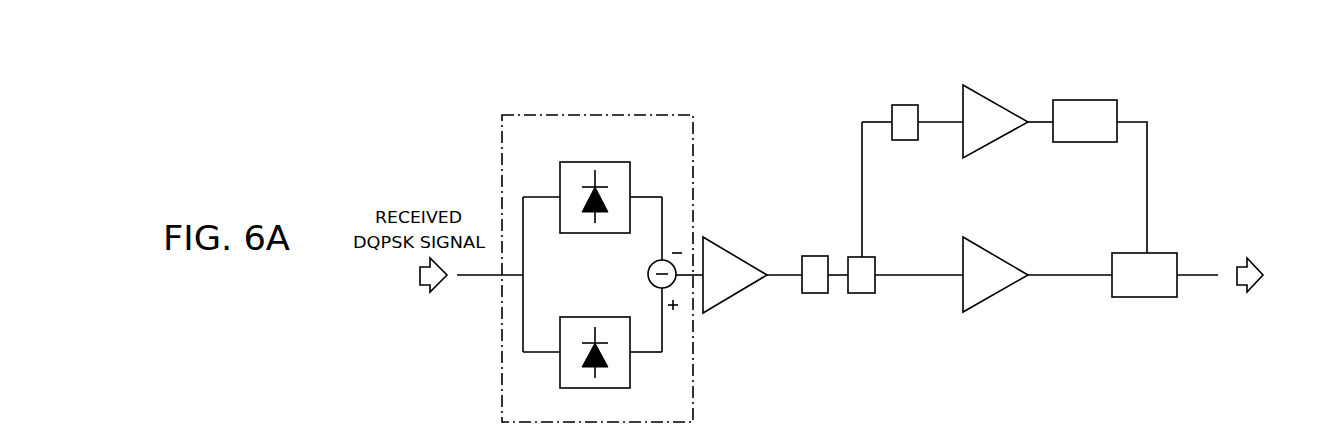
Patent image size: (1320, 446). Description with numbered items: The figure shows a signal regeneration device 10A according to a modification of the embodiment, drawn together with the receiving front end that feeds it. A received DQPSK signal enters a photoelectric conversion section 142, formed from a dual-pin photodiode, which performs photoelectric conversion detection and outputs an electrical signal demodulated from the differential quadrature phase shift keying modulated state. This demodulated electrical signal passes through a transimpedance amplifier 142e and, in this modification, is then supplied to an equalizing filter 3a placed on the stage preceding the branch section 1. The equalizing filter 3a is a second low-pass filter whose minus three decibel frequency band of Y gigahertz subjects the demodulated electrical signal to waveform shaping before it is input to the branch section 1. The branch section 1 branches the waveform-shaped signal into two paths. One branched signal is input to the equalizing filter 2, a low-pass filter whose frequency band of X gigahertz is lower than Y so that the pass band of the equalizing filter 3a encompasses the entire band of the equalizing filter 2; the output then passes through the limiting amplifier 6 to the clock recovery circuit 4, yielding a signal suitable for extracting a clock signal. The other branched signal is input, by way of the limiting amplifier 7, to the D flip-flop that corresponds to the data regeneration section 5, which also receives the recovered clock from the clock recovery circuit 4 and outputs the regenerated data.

The signal regeneration device 10A is at (1174, 105).
The photoelectric conversion section 142 is at (597, 114).
The transimpedance amplifier 142e is at (737, 293).
The equalizing filter 3a is at (815, 255).
The branch section 1 is at (869, 257).
The equalizing filter 2 is at (898, 105).
The limiting amplifier 6 is at (997, 140).
The clock recovery circuit 4 is at (1087, 142).
The limiting amplifier 7 is at (990, 250).
The data regeneration section 5 is at (1157, 253).